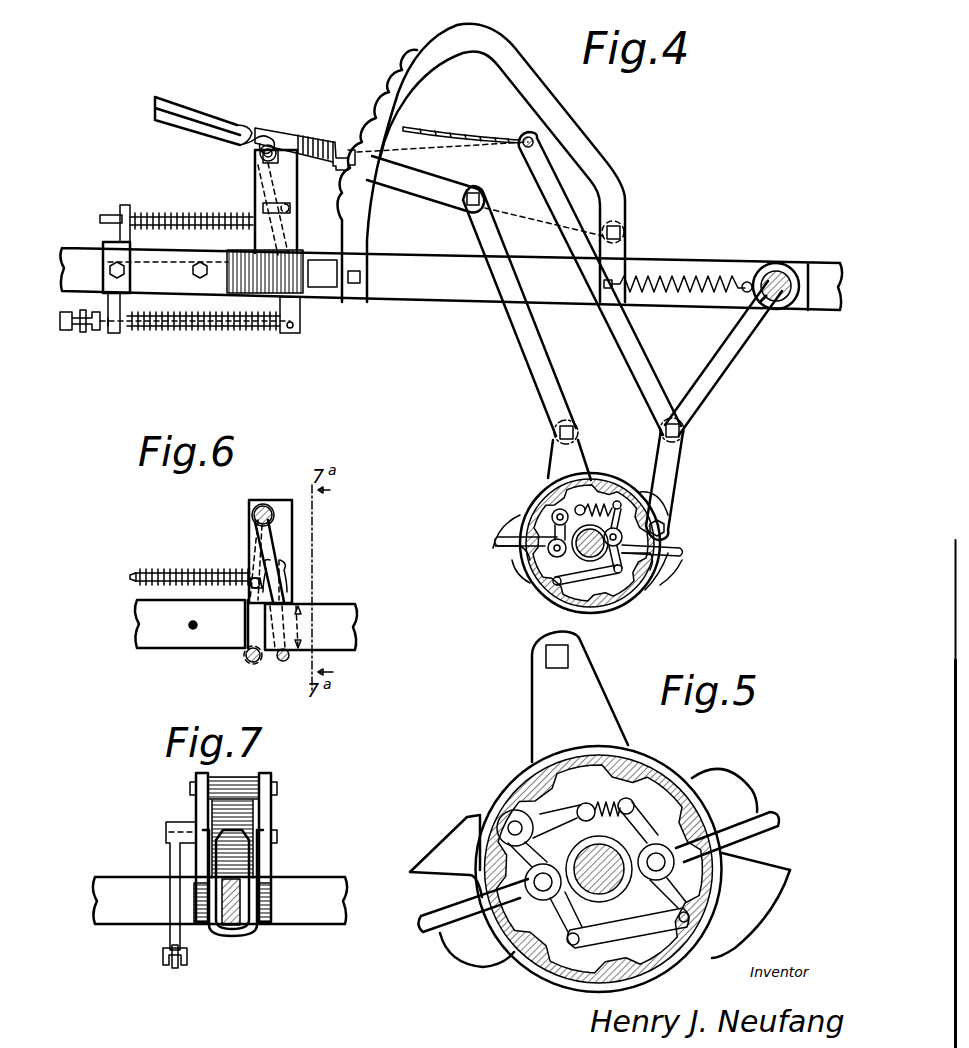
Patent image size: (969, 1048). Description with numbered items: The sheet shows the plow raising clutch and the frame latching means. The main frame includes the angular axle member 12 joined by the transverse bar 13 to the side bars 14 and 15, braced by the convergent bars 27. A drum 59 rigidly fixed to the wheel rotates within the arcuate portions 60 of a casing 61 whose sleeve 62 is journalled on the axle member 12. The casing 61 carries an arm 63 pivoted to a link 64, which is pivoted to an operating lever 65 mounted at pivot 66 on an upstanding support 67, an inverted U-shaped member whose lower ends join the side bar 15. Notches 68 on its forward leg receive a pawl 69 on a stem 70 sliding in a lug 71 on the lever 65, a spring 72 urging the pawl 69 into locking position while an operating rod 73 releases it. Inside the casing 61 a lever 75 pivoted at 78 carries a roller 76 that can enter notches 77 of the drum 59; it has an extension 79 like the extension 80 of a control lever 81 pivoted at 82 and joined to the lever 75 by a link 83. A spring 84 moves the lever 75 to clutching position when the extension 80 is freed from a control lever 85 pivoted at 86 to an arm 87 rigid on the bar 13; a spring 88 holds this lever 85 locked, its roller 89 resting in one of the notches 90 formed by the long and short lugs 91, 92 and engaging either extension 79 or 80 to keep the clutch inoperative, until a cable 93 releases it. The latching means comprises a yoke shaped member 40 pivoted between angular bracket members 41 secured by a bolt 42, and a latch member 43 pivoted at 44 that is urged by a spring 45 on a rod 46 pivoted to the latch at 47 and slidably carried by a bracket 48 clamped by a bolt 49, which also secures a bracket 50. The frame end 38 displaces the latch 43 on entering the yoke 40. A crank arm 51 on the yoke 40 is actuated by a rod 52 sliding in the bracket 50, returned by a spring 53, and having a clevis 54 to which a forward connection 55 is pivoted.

In FIG. 4, the axle member 12 is at (589, 560).
In FIG. 5, the axle member 12 is at (608, 885).
In FIG. 4, the transverse bar 13 is at (781, 281).
In FIG. 7, the side bar 14 is at (328, 888).
In FIG. 4, the side bar 15 is at (445, 300).
In FIG. 7, the side bar 15 is at (117, 890).
In FIG. 4, the brace bar 27 is at (322, 273).
In FIG. 6, the frame end 38 is at (335, 606).
In FIG. 7, the frame end 38 is at (227, 928).
In FIG. 4, the yoke shaped member 40 is at (285, 298).
In FIG. 6, the yoke shaped member 40 is at (251, 663).
In FIG. 7, the yoke shaped member 40 is at (236, 932).
In FIG. 6, the bracket member 41 is at (283, 538).
In FIG. 7, the bracket member 41 is at (197, 805).
In FIG. 4, the bolt 42 is at (193, 270).
In FIG. 6, the bolt 42 is at (188, 626).
In FIG. 4, the latch member 43 is at (258, 180).
In FIG. 6, the latch member 43 is at (254, 529).
In FIG. 7, the latch member 43 is at (243, 818).
In FIG. 4, the pivot 44 is at (277, 148).
In FIG. 6, the pivot 44 is at (263, 506).
In FIG. 7, the pivot 44 is at (250, 778).
In FIG. 4, the spring 45 is at (188, 220).
In FIG. 6, the spring 45 is at (169, 572).
In FIG. 4, the rod 46 is at (107, 218).
In FIG. 6, the rod 46 is at (136, 576).
In FIG. 4, the pivotal connection 47 is at (292, 228).
In FIG. 6, the pivotal connection 47 is at (252, 578).
In FIG. 4, the bracket 48 is at (128, 210).
In FIG. 4, the bolt 49 is at (113, 266).
In FIG. 4, the bracket 50 is at (122, 308).
In FIG. 4, the crank arm 51 is at (302, 310).
In FIG. 7, the crank arm 51 is at (170, 933).
In FIG. 4, the rod 52 is at (220, 330).
In FIG. 7, the rod 52 is at (174, 966).
In FIG. 4, the spring 53 is at (175, 330).
In FIG. 4, the head or clevis 54 is at (99, 328).
In FIG. 4, the connection 55 is at (64, 330).
In FIG. 4, the drum 59 is at (652, 566).
In FIG. 5, the drum 59 is at (673, 776).
In FIG. 4, the arcuate portion 60 is at (536, 500).
In FIG. 5, the arcuate portion 60 is at (636, 747).
In FIG. 5, the casing 61 is at (493, 792).
In FIG. 5, the sleeve 62 is at (587, 852).
In FIG. 4, the arm 63 is at (578, 443).
In FIG. 5, the arm 63 is at (585, 673).
In FIG. 4, the link 64 is at (548, 358).
In FIG. 4, the operating lever 65 is at (457, 186).
In FIG. 4, the pivot 66 is at (620, 234).
In FIG. 4, the upstanding support 67 is at (586, 138).
In FIG. 4, the notches 68 is at (403, 70).
In FIG. 4, the pawl 69 is at (347, 140).
In FIG. 4, the stem 70 is at (266, 143).
In FIG. 4, the lug 71 is at (304, 125).
In FIG. 4, the spring 72 is at (318, 136).
In FIG. 4, the operating rod 73 is at (200, 117).
In FIG. 5, the lever 75 is at (560, 826).
In FIG. 4, the roller 76 is at (554, 510).
In FIG. 5, the roller 76 is at (497, 820).
In FIG. 4, the notches 77 is at (557, 592).
In FIG. 5, the notches 77 is at (533, 782).
In FIG. 5, the pivot 78 is at (541, 895).
In FIG. 4, the operating extension 79 is at (520, 538).
In FIG. 5, the operating extension 79 is at (427, 932).
In FIG. 4, the extension 80 is at (682, 552).
In FIG. 5, the extension 80 is at (776, 817).
In FIG. 5, the control lever 81 is at (638, 833).
In FIG. 5, the pivot 82 is at (658, 858).
In FIG. 4, the link 83 is at (617, 588).
In FIG. 5, the link 83 is at (633, 928).
In FIG. 4, the spring 84 is at (591, 500).
In FIG. 5, the spring 84 is at (607, 803).
In FIG. 4, the control lever 85 is at (674, 473).
In FIG. 4, the pivot 86 is at (688, 431).
In FIG. 4, the arm 87 is at (738, 358).
In FIG. 4, the spring 88 is at (704, 277).
In FIG. 4, the roller 89 is at (668, 516).
In FIG. 4, the notches 90 is at (673, 528).
In FIG. 5, the notches 90 is at (450, 887).
In FIG. 4, the long lug 91 is at (518, 520).
In FIG. 5, the long lug 91 is at (450, 823).
In FIG. 4, the short lug 92 is at (642, 493).
In FIG. 5, the short lug 92 is at (470, 957).
In FIG. 4, the cable 93 is at (479, 136).